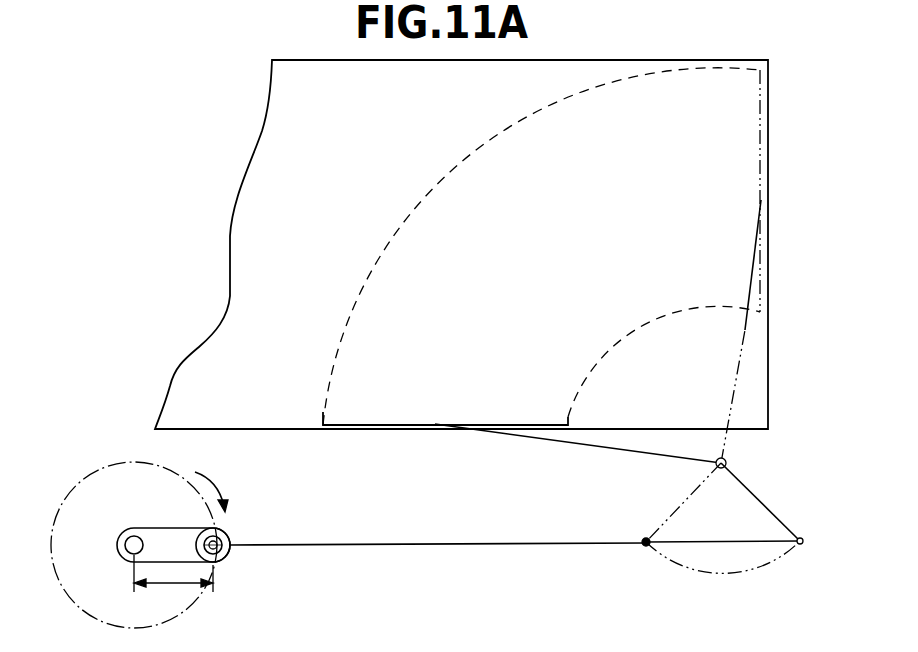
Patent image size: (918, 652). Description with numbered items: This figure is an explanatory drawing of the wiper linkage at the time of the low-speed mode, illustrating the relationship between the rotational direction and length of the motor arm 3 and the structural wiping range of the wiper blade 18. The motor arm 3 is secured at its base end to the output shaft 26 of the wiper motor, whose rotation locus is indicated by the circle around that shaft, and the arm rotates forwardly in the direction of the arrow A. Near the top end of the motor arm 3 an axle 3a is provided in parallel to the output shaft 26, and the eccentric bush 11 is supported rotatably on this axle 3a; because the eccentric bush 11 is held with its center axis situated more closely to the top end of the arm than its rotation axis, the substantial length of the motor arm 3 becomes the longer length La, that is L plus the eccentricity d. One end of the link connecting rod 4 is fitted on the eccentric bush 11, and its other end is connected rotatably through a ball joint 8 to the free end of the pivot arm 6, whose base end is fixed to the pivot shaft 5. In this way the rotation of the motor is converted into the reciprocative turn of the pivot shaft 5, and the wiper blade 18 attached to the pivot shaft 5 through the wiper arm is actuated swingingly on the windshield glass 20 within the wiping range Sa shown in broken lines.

The windshield glass 20 is at (294, 147).
The wiping range Sa is at (535, 262).
The wiper blade 18 is at (384, 424).
The pivot shaft 5 is at (728, 463).
The pivot arm 6 is at (770, 507).
The ball joint 8 is at (803, 537).
The link connecting rod 4 is at (464, 543).
The motor arm 3 is at (163, 538).
The axle 3a is at (226, 536).
The eccentric bush 11 is at (224, 553).
The output shaft 26 is at (118, 535).